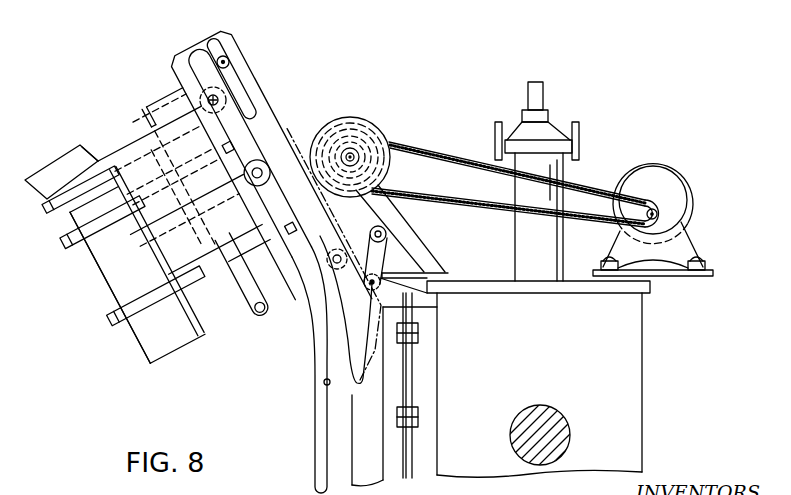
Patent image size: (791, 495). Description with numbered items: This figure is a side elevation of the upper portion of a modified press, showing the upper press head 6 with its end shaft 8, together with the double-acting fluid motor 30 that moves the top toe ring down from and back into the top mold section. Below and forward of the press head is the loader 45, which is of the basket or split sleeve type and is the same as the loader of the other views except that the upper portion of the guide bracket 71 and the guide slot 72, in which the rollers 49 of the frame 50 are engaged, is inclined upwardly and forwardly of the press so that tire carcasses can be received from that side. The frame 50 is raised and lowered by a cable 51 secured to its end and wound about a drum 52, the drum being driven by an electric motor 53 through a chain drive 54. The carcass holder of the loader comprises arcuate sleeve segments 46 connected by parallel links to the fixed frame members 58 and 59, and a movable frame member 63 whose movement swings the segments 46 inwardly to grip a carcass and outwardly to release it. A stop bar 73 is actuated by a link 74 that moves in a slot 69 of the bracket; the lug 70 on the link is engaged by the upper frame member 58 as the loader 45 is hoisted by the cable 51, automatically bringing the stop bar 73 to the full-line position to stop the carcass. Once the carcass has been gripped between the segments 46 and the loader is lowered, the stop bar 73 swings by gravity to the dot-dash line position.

The upper press head 6 is at (643, 368).
The shaft 8 is at (553, 416).
The double-acting fluid motor 30 is at (516, 248).
The press loading mechanism 45 is at (135, 338).
The arcuate sleeve segments 46 is at (107, 276).
The rollers 49 is at (202, 97).
The frame 50 is at (107, 163).
The cables 51 is at (296, 160).
The drums 52 is at (364, 122).
The electric motor 53 is at (674, 170).
The chain drive 54 is at (436, 152).
The upper fixed frame member 58 is at (45, 211).
The fixed frame member 59 is at (113, 323).
The movable frame member 63 is at (66, 250).
The slots 69 is at (249, 98).
The lug 70 is at (231, 64).
The guide bracket 71 is at (319, 416).
The guide slot 72 is at (323, 382).
The stop bar 73 is at (268, 309).
The link 74 is at (292, 128).